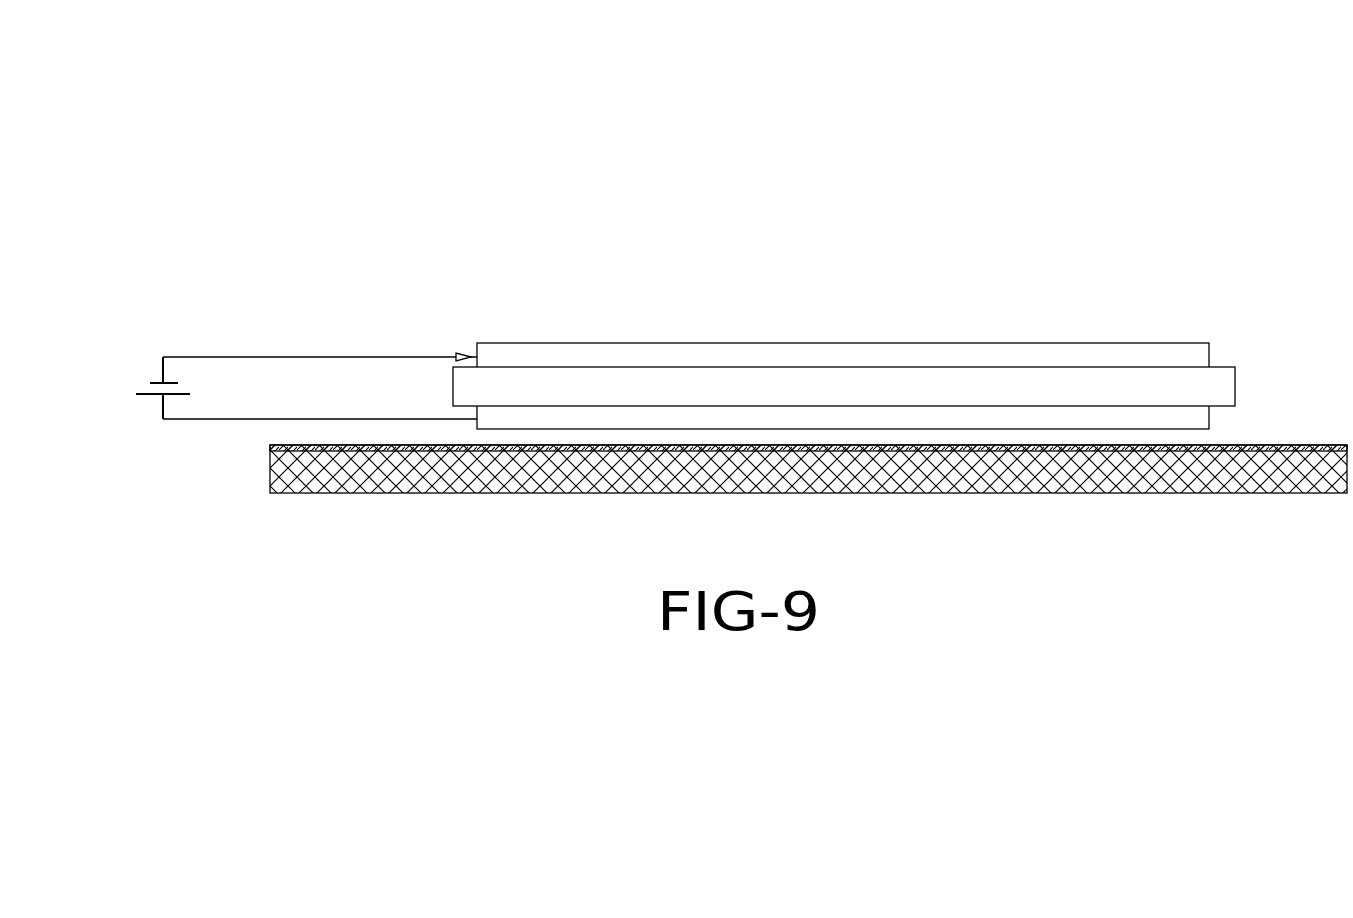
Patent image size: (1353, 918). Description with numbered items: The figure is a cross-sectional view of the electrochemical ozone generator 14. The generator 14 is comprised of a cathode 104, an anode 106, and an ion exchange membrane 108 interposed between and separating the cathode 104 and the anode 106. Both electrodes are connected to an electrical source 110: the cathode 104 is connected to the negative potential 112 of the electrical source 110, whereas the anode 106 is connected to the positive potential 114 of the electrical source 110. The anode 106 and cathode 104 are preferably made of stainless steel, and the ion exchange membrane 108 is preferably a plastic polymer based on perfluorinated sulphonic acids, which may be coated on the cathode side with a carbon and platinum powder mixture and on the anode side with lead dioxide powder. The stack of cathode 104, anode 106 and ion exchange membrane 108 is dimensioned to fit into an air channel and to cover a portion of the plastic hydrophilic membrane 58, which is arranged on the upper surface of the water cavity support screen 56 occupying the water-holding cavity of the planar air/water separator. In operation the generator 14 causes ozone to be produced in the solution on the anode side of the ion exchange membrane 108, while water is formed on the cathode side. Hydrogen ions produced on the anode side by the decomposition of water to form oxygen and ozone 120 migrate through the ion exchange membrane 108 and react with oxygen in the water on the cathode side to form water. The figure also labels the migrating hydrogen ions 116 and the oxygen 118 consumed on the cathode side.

The electrochemical ozone generator 14 is at (782, 140).
The water cavity support screen 56 is at (808, 460).
The hydrophilic membrane 58 is at (1317, 443).
The cathode 104 is at (873, 357).
The anode 106 is at (1040, 418).
The ion exchange membrane 108 is at (938, 390).
The electrical source 110 is at (288, 375).
The negative potential 112 is at (222, 357).
The positive potential 114 is at (197, 419).
The hydrogen ions 116 is at (669, 376).
The oxygen 118 is at (605, 343).
The oxygen and ozone 120 is at (1293, 285).